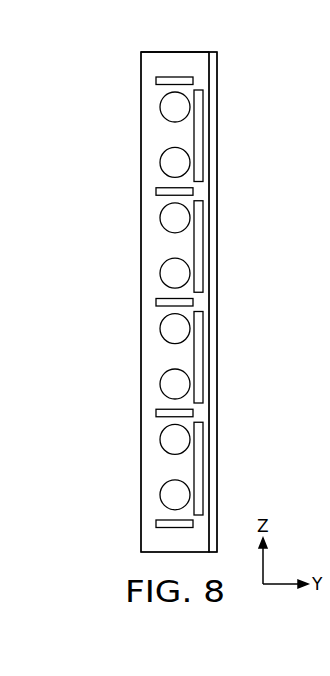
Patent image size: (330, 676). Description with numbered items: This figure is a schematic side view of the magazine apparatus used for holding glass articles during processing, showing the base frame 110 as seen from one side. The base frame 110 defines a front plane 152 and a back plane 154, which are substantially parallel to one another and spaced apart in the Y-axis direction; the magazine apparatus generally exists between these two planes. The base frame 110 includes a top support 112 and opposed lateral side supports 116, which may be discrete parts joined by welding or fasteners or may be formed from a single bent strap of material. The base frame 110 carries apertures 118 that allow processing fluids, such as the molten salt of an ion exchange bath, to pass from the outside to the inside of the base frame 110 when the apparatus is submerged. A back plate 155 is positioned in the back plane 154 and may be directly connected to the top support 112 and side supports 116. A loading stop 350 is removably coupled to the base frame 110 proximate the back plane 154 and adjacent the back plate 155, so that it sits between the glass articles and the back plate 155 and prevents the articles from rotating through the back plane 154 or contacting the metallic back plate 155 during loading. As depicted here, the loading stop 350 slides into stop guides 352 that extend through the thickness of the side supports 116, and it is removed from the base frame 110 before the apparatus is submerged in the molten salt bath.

The base frame 110 is at (185, 52).
The top support 112 is at (152, 52).
The side supports 116 is at (141, 110).
The apertures 118 is at (160, 218).
The front plane 152 is at (128, 382).
The back plane 154 is at (237, 112).
The back plate 155 is at (217, 222).
The loading stop 350 is at (203, 480).
The stop guides 352 is at (203, 434).